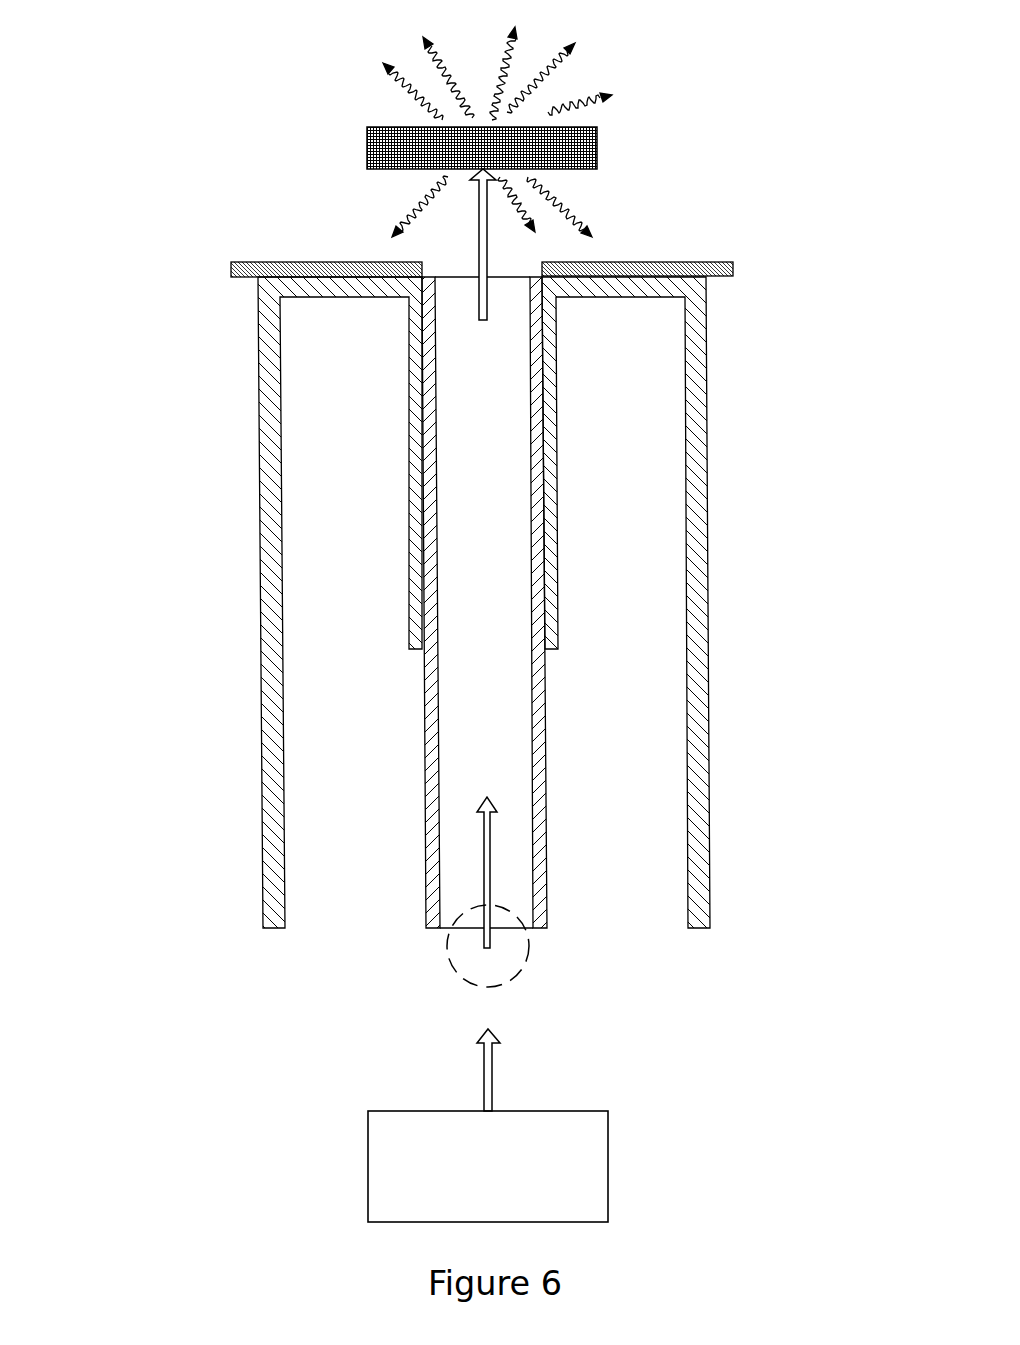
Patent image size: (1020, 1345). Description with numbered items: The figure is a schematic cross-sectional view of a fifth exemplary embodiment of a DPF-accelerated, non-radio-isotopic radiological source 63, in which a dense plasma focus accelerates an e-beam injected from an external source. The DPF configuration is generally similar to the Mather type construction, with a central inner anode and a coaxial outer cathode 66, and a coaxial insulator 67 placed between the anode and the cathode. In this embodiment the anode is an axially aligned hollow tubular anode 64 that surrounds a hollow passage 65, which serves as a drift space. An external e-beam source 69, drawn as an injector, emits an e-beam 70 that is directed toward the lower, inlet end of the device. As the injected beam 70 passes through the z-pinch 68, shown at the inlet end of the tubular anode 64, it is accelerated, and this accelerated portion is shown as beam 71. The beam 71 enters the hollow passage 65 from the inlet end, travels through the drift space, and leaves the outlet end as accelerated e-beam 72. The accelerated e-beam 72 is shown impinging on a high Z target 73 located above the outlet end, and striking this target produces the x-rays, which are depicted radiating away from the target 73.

The X-ray source system 63 is at (124, 210).
The hollow tubular anode 64 is at (425, 735).
The hollow passage 65 is at (488, 669).
The coaxial outer cathode 66 is at (258, 557).
The coaxial insulator 67 is at (337, 262).
The z-pinch 68 is at (447, 956).
The external e-beam source 69 is at (608, 1172).
The e-beam 70 is at (492, 1050).
The beam 71 is at (490, 815).
The accelerated e-beam 72 is at (478, 197).
The high Z target 73 is at (578, 127).